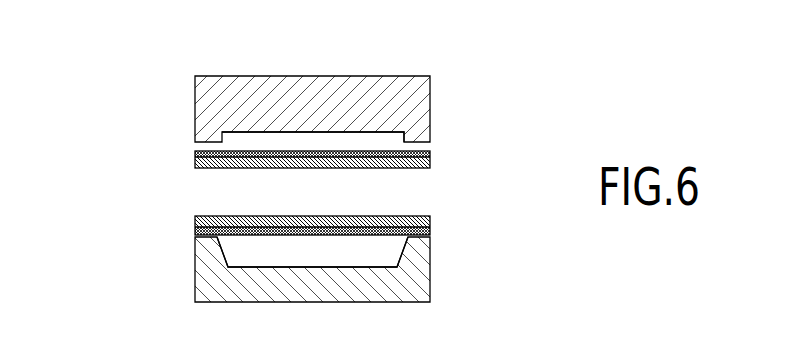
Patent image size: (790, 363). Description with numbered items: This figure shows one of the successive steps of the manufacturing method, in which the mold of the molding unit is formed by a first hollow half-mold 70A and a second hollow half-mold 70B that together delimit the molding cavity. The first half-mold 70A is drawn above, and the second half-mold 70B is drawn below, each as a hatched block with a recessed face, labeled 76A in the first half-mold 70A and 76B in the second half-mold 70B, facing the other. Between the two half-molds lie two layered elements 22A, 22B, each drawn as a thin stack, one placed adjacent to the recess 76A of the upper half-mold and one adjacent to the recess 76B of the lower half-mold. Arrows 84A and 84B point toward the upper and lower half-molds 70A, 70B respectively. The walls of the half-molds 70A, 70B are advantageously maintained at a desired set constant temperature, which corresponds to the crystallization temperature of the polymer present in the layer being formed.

The first hollow half-mold 70A is at (195, 93).
The recess of first mold part 76A is at (243, 137).
The pressing direction of first mold part 84A is at (156, 165).
The first layer of laminate 22A is at (333, 151).
The second layer of laminate 22B is at (417, 169).
The pressing direction of second mold part 84B is at (162, 229).
The second hollow half-mold 70B is at (195, 268).
The recess of second mold part 76B is at (265, 248).